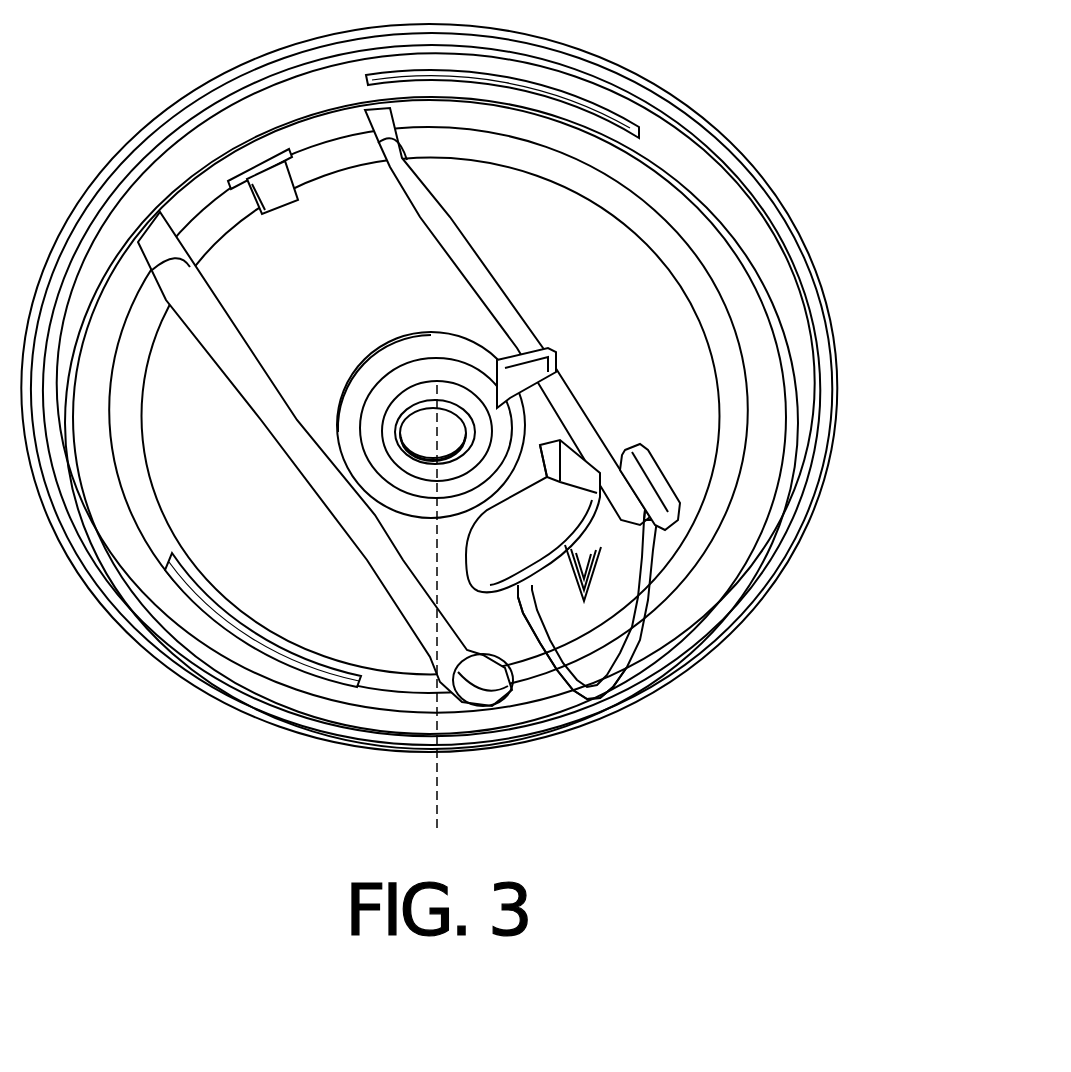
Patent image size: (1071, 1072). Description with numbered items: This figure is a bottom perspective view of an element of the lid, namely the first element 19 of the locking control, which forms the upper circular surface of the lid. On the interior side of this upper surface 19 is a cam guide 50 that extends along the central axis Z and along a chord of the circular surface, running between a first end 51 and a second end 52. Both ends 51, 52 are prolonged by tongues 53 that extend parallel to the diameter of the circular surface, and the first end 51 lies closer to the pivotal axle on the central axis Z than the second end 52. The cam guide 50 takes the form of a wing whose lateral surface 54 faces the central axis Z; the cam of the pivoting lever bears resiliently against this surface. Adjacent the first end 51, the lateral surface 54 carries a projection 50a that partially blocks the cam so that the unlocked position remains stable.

The first element 19 is at (663, 130).
The cam guide 50 is at (650, 618).
The projection 50a is at (652, 548).
The first end 51 is at (676, 535).
The second end 52 is at (597, 693).
The tongues 53 is at (658, 477).
The lateral surface 54 is at (628, 672).